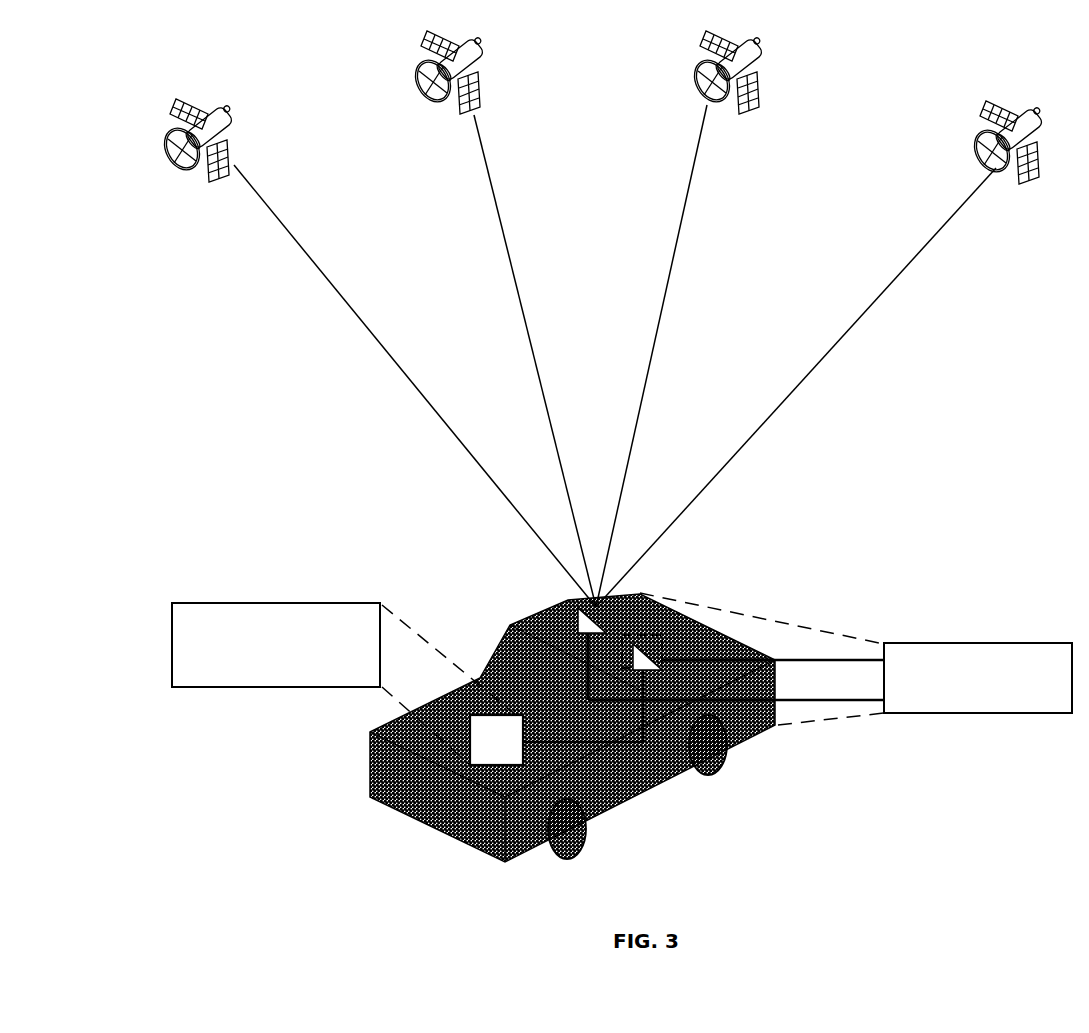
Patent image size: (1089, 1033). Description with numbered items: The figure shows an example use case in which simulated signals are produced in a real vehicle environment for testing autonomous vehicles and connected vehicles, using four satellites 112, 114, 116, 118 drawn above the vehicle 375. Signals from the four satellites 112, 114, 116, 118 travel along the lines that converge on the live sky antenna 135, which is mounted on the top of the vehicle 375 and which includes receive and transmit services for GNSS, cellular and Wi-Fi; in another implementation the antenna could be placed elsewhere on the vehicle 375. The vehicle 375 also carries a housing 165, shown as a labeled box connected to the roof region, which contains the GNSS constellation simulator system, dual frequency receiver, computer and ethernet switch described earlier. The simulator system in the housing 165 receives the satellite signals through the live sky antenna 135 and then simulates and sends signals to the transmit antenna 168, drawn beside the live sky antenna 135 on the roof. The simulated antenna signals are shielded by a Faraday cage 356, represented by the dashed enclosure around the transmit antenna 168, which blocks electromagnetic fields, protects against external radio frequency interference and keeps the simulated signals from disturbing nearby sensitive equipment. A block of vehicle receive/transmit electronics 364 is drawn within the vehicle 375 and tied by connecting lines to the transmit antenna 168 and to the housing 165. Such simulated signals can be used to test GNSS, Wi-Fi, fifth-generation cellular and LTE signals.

The satellite 112 is at (198, 155).
The satellite 114 is at (449, 86).
The satellite 116 is at (728, 86).
The satellite 118 is at (1008, 156).
The live sky antenna 135 is at (577, 620).
The transmit antenna 168 is at (640, 645).
The Faraday cage 356 is at (667, 643).
The vehicle receive/transmit electronics 364 is at (407, 684).
The housing 165 is at (830, 659).
The vehicle 375 is at (637, 800).